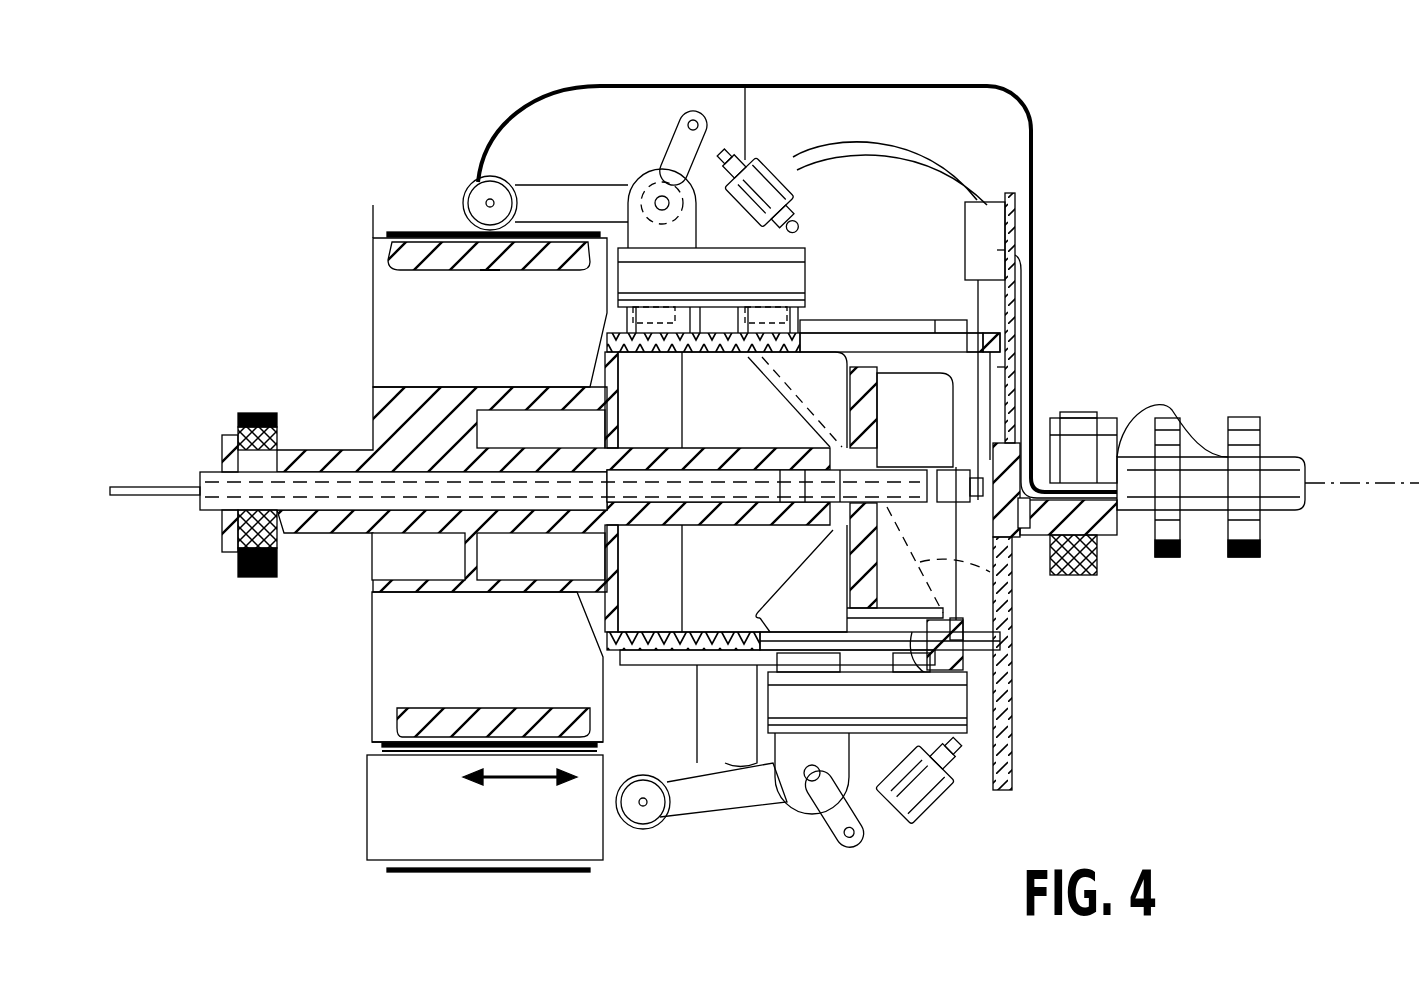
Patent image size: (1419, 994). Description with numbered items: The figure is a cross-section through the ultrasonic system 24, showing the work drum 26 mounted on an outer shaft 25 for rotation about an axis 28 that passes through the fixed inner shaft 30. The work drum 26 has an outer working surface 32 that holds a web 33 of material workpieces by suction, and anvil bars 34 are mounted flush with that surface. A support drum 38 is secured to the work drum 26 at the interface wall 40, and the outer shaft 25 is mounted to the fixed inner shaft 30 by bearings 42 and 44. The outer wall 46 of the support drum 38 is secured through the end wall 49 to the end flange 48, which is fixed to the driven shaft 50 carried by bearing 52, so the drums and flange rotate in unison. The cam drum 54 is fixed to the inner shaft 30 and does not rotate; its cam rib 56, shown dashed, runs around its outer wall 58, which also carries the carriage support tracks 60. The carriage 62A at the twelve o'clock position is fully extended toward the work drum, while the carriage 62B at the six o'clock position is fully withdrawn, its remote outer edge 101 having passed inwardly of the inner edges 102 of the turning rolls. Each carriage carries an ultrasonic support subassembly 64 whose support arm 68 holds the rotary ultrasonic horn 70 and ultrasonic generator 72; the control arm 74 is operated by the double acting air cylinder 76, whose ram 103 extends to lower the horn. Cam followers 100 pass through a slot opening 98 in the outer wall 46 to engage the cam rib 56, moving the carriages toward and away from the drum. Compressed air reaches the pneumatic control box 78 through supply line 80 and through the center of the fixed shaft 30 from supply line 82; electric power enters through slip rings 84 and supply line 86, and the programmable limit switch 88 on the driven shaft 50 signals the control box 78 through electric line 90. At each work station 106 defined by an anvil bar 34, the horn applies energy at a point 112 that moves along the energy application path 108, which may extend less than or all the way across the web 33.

The ultrasonic system 24 is at (1082, 108).
The outer shaft 25 is at (345, 450).
The work drum 26 is at (372, 367).
The axis 28 is at (1368, 483).
The fixed inner shaft 30 is at (342, 510).
The outer working surface 32 is at (385, 206).
The web 33 is at (430, 232).
The anvil bars 34 is at (447, 268).
The support drum 38 is at (848, 333).
The interface wall 40 is at (600, 545).
The bearing 42 is at (233, 440).
The bearing 44 is at (825, 525).
The outer wall 46 is at (832, 318).
The end flange 48 is at (1013, 675).
The end wall 49 is at (997, 367).
The driven shaft 50 is at (1280, 457).
The bearing 52 is at (1085, 417).
The cam drum 54 is at (960, 417).
The cam rib 56 is at (1040, 590).
The outer wall 58 is at (758, 618).
The carriage support tracks 60 is at (935, 320).
The carriage 62A is at (812, 262).
The carriage 62B is at (967, 692).
The ultrasonic support subassembly 64 is at (578, 98).
The support arm 68 is at (588, 185).
The rotary ultrasonic horn 70 is at (655, 812).
The ultrasonic generator 72 is at (497, 205).
The control arm 74 is at (663, 153).
The double acting air cylinder 76 is at (796, 150).
The pneumatic control box 78 is at (986, 200).
The supply line 80 is at (1005, 305).
The supply line 82 is at (172, 495).
The slip rings 84 is at (1245, 557).
The supply line 86 is at (935, 85).
The programmable limit switch 88 is at (1168, 557).
The electric line 90 is at (1010, 278).
The slot opening 98 is at (953, 342).
The cam followers 100 is at (765, 372).
The remote outer edge 101 is at (483, 178).
The inner edges 102 is at (610, 830).
The ram 103 is at (745, 86).
The work station 106 is at (372, 748).
The energy application path 108 is at (520, 777).
The point 112 is at (490, 275).